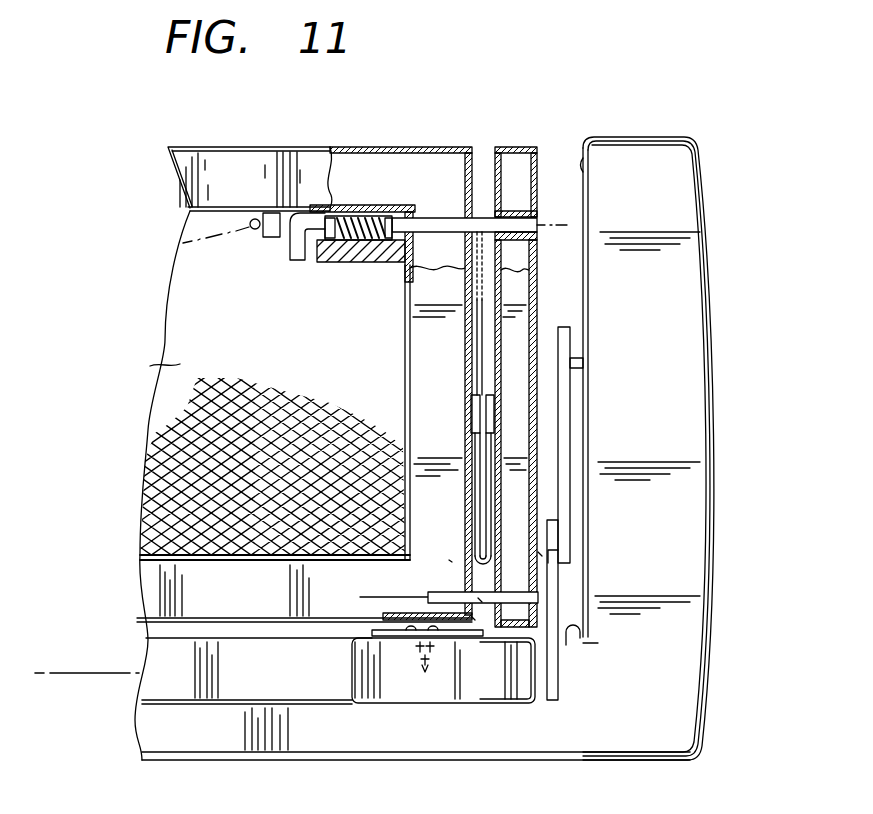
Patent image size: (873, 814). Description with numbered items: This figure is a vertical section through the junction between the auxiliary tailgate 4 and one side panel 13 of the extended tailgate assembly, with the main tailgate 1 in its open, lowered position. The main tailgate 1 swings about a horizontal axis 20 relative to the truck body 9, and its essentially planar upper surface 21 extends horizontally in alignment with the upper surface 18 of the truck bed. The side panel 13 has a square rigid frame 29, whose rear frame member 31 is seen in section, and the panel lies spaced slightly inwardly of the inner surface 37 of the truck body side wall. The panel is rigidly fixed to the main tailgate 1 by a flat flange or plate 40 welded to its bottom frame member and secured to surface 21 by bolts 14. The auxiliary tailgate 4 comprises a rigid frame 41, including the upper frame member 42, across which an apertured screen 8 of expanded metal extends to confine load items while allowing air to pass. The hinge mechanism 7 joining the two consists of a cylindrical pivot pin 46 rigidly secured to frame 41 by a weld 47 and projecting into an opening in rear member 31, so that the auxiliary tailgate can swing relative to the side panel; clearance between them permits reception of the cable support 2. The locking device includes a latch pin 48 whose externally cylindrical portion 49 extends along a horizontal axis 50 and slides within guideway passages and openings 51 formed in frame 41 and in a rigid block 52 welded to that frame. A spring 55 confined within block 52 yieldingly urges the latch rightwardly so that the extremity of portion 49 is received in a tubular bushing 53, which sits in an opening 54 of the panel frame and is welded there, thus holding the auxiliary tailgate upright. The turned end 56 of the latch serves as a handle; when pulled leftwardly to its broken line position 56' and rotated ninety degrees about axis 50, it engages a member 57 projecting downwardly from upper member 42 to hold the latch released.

The main tailgate 1 is at (310, 680).
The tailgate support 2 is at (478, 432).
The auxiliary tailgate 4 is at (128, 204).
The hinge mechanism 7 is at (449, 558).
The apertured screen 8 is at (170, 365).
The truck body 9 is at (722, 385).
The side panel 13 is at (545, 410).
The bolt 14 is at (443, 664).
The upper surface of truck bed 18 is at (573, 641).
The horizontal axis 20 is at (68, 672).
The upper surface of main tailgate 21 is at (205, 632).
The rigid frame 29 is at (533, 305).
The rear frame member 31 is at (540, 552).
The inner surface of side wall 37 is at (584, 160).
The flange or plate 40 is at (480, 600).
The rigid frame of auxiliary tailgate 41 is at (258, 165).
The upper frame member 42 is at (228, 162).
The pivot pin 46 is at (538, 598).
The weld 47 is at (473, 618).
The latch pin 48 is at (480, 214).
The cylindrical portion 49 is at (453, 220).
The horizontal axis 50 is at (555, 227).
The guideway passage and opening 51 is at (318, 216).
The rigid block 52 is at (352, 263).
The tubular bushing 53 is at (518, 212).
The opening 54 is at (537, 236).
The spring 55 is at (364, 206).
The end of latch element 56 is at (284, 262).
The broken line position of handle 56' is at (185, 234).
The member 57 is at (273, 238).